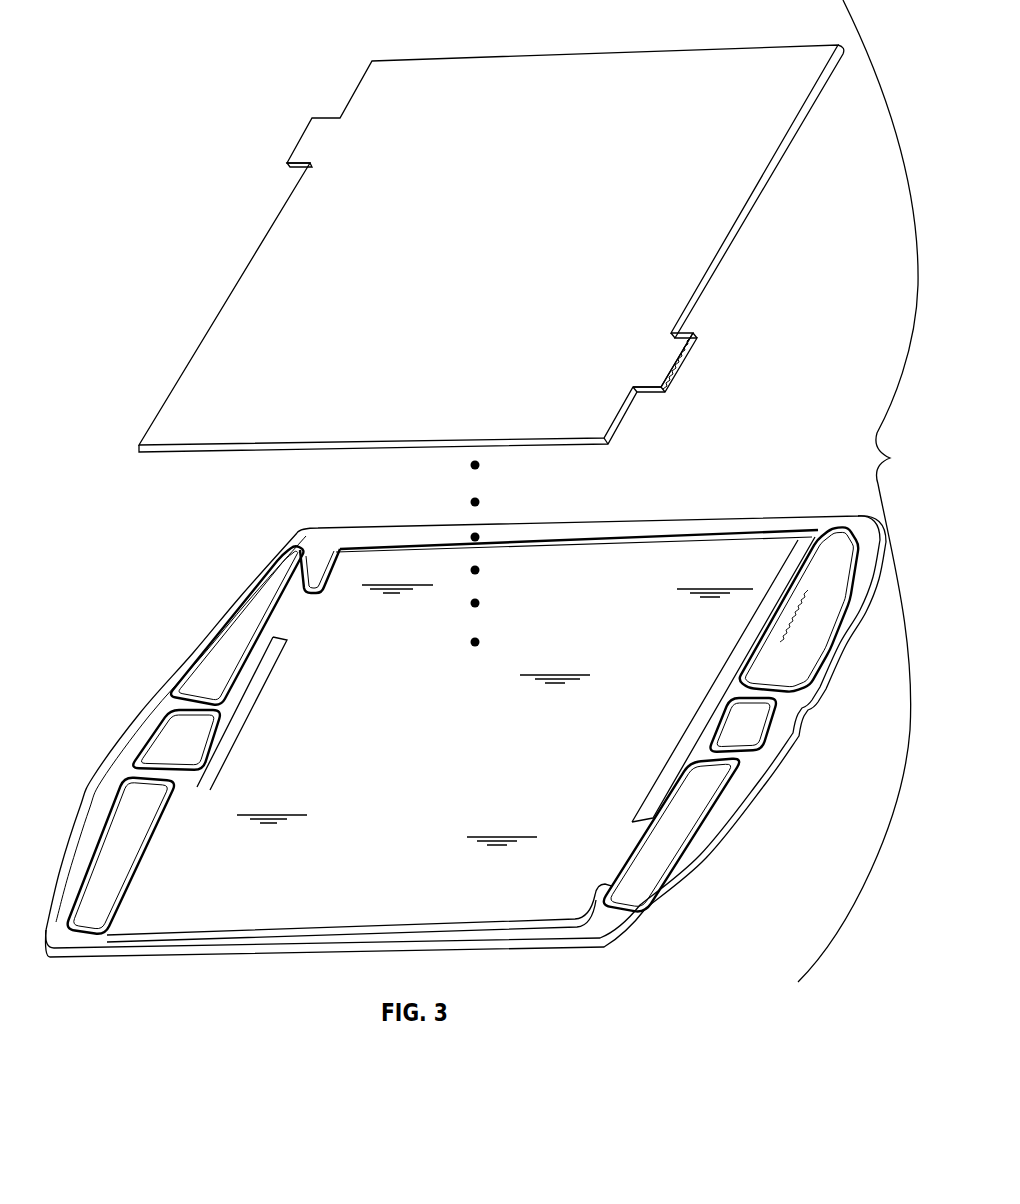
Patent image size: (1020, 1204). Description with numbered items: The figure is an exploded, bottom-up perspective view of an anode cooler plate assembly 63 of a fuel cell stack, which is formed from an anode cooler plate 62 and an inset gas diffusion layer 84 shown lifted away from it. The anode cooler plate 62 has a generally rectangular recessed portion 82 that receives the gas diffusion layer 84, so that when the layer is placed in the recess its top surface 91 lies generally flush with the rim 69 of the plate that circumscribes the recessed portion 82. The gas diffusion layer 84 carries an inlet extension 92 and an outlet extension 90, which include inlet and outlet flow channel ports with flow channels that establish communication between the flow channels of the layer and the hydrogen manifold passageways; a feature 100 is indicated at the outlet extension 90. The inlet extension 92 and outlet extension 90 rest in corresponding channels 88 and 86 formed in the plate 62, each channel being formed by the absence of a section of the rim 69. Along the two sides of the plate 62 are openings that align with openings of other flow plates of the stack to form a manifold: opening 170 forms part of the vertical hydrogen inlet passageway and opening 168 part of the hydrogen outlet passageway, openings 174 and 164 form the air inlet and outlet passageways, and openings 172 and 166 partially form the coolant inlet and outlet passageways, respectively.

The inset gas diffusion layer 84 is at (190, 351).
The top surface 91 is at (437, 289).
The inlet extension 92 is at (290, 167).
The outlet extension 90 is at (661, 391).
The serrated edge 100 is at (680, 388).
The anode cooler plate assembly 63 is at (860, 491).
The anode cooler plate 62 is at (503, 947).
The recessed portion 82 is at (409, 826).
The channel 88 is at (287, 607).
The rim 69 is at (352, 940).
The channel 86 is at (645, 853).
The opening 170 is at (260, 620).
The opening 172 is at (185, 750).
The opening 174 is at (83, 908).
The opening 164 is at (837, 557).
The opening 166 is at (745, 728).
The opening 168 is at (693, 800).